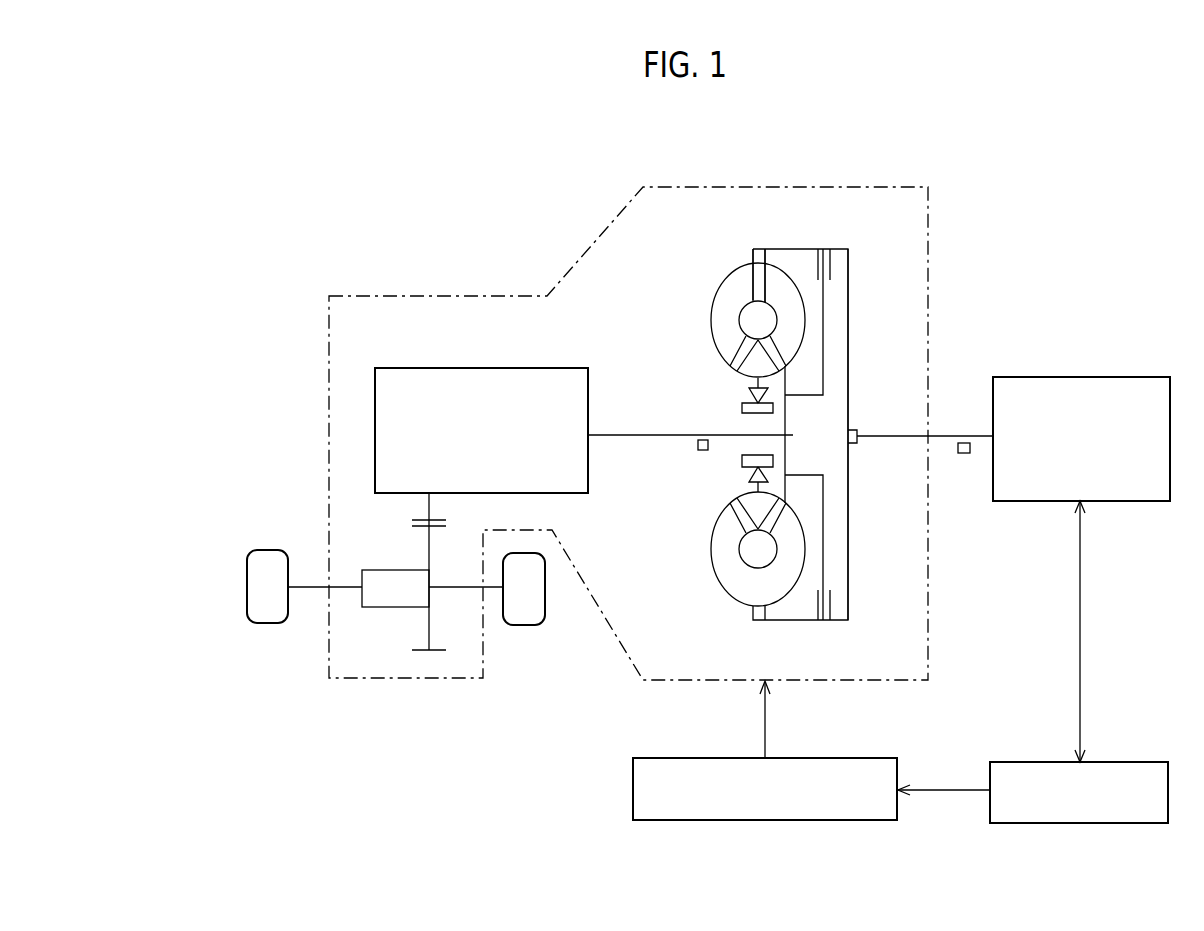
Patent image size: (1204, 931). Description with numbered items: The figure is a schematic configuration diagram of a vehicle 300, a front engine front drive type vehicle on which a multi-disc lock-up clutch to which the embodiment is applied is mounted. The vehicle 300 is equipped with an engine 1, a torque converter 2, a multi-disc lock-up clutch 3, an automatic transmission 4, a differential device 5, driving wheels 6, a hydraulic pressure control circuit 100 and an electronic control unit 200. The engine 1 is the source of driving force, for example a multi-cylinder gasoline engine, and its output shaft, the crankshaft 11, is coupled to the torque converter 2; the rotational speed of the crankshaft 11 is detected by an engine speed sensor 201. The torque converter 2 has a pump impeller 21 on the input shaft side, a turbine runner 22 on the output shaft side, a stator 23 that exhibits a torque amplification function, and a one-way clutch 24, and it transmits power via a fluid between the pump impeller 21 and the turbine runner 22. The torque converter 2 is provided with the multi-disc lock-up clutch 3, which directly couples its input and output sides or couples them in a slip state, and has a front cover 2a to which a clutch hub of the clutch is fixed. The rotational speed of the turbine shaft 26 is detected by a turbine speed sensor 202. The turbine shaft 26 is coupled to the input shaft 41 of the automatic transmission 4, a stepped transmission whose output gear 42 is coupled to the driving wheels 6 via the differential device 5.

The engine 1 is at (1050, 377).
The torque converter 2 is at (728, 245).
The front cover 2a is at (848, 307).
The multi-disc lock-up clutch 3 is at (835, 267).
The automatic transmission 4 is at (507, 368).
The differential device 5 is at (387, 612).
The driving wheels 6 is at (265, 623).
The crankshaft 11 is at (968, 435).
The pump impeller 21 is at (725, 292).
The turbine runner 22 is at (782, 277).
The stator 23 is at (745, 373).
The one-way clutch 24 is at (743, 403).
The turbine shaft 26 is at (733, 437).
The input shaft 41 is at (648, 427).
The output gear 42 is at (418, 517).
The hydraulic pressure control circuit 100 is at (660, 758).
The electronic control unit 200 is at (1035, 762).
The engine speed sensor 201 is at (963, 453).
The turbine speed sensor 202 is at (698, 447).
The vehicle 300 is at (472, 200).